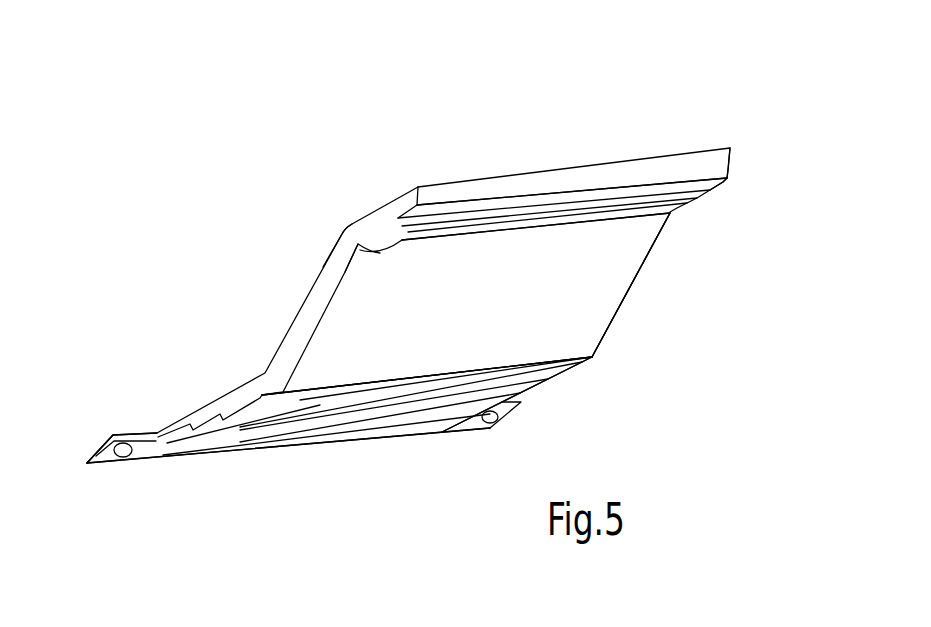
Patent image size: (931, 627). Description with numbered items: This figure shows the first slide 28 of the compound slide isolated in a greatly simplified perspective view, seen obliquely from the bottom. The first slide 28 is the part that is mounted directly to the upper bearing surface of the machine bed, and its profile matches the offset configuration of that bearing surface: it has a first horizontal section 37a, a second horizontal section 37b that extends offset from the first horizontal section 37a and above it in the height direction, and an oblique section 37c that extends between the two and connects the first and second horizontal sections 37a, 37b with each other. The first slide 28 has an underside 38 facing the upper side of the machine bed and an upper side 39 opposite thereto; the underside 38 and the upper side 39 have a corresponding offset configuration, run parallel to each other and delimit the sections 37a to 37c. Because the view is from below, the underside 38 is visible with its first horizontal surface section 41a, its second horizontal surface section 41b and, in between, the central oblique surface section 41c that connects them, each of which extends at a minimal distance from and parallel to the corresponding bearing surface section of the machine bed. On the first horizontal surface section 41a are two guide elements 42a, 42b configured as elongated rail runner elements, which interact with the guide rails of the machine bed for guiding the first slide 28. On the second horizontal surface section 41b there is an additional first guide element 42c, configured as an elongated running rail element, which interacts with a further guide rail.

The first slide 28 is at (283, 302).
The first horizontal section 37a is at (614, 396).
The second horizontal section 37b is at (760, 153).
The oblique section 37c is at (694, 272).
The underside 38 is at (598, 282).
The upper side 39 is at (527, 173).
The first horizontal surface section 41a is at (378, 407).
The second horizontal surface section 41b is at (667, 183).
The central oblique surface section 41c is at (497, 322).
The guide element 42a is at (202, 438).
The guide element 42b is at (282, 408).
The additional first guide element 42c is at (352, 243).